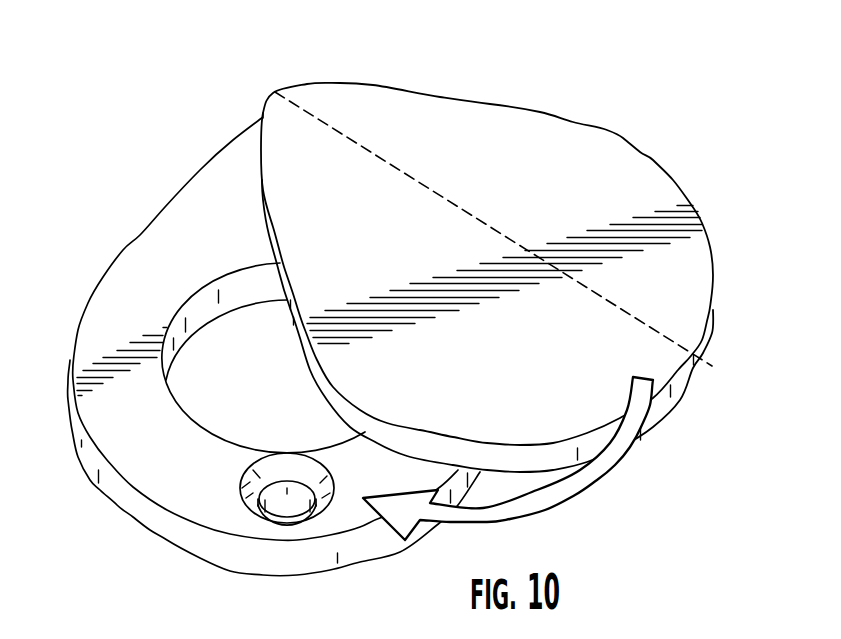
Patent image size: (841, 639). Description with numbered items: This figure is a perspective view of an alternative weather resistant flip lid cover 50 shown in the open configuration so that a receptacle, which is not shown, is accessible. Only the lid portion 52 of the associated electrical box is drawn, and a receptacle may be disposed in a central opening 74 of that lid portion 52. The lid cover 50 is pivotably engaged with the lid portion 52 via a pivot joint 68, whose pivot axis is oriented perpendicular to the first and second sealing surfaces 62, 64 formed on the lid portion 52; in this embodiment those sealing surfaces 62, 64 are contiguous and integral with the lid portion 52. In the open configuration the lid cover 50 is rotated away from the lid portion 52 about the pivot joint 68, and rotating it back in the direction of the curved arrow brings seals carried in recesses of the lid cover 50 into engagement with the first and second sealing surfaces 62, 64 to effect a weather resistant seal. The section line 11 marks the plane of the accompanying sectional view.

The section line 11- 11 is at (267, 88).
The lid cover 50 is at (569, 140).
The lid portion 52 is at (103, 478).
The first sealing surface 62 is at (198, 277).
The second sealing surface 64 is at (123, 313).
The pivot joint 68 is at (258, 108).
The central opening 74 is at (262, 400).